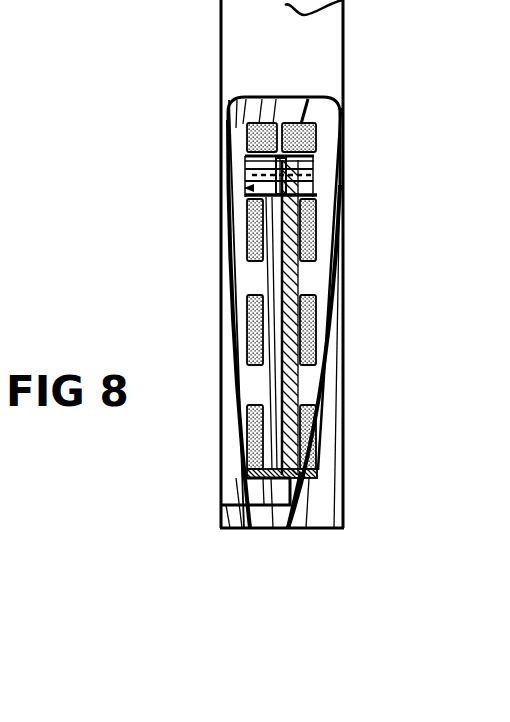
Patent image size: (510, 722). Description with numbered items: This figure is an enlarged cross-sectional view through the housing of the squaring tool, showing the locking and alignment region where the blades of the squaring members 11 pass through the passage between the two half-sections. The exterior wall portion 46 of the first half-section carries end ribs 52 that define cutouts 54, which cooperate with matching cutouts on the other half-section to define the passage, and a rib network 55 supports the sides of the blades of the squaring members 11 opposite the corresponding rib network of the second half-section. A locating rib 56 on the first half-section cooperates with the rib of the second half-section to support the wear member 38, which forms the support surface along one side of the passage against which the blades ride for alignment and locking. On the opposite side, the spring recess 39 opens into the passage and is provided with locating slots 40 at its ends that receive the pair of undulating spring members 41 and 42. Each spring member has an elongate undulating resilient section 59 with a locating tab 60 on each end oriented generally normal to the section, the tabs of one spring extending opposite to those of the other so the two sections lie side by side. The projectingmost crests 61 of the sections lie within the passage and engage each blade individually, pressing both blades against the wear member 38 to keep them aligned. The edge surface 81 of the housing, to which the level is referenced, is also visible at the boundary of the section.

The squaring member 11 is at (229, 340).
The wear member 38 is at (318, 466).
The spring recess 39 is at (255, 170).
The locating slots 40 is at (243, 162).
The spring member 41 is at (322, 186).
The spring member 42 is at (277, 192).
The exterior wall portion 46 is at (339, 287).
The end ribs 52 is at (331, 328).
The cutouts 54 is at (324, 358).
The rib network 55 is at (309, 393).
The locating rib 56 is at (289, 495).
The elongate undulating resilient section 59 is at (252, 184).
The locating tab 60 is at (336, 117).
The crests 61 is at (257, 222).
The edge surface 81 is at (258, 530).